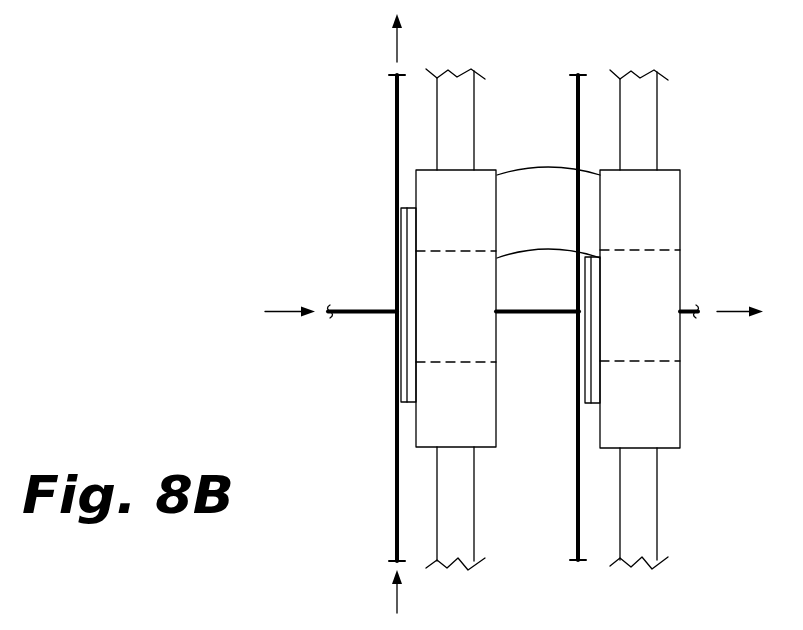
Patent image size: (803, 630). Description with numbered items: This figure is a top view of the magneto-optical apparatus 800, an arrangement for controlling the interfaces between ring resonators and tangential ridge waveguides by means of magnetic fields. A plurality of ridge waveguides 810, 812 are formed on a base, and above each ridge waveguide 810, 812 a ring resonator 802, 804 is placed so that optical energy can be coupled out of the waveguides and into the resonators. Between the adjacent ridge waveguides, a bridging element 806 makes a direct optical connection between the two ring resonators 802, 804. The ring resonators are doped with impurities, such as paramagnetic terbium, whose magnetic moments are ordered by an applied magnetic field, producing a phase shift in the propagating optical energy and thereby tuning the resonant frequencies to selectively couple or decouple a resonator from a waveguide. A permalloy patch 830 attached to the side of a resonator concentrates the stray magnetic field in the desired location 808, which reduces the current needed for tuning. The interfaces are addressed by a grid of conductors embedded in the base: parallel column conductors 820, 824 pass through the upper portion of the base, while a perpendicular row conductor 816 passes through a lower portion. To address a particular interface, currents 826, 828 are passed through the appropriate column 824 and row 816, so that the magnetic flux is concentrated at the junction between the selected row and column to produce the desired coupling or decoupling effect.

The magneto-optical apparatus 800 is at (243, 158).
The ring resonator 802 is at (478, 178).
The ring resonator 804 is at (668, 188).
The bridging element 806 is at (547, 182).
The desired location 808 is at (410, 217).
The ridge waveguide 810 is at (650, 522).
The ridge waveguide 812 is at (470, 545).
The row conductor 816 is at (365, 313).
The column conductor 820 is at (577, 494).
The column conductor 824 is at (395, 507).
The current 826 is at (395, 598).
The current 828 is at (278, 313).
The permalloy patch 830 is at (598, 391).